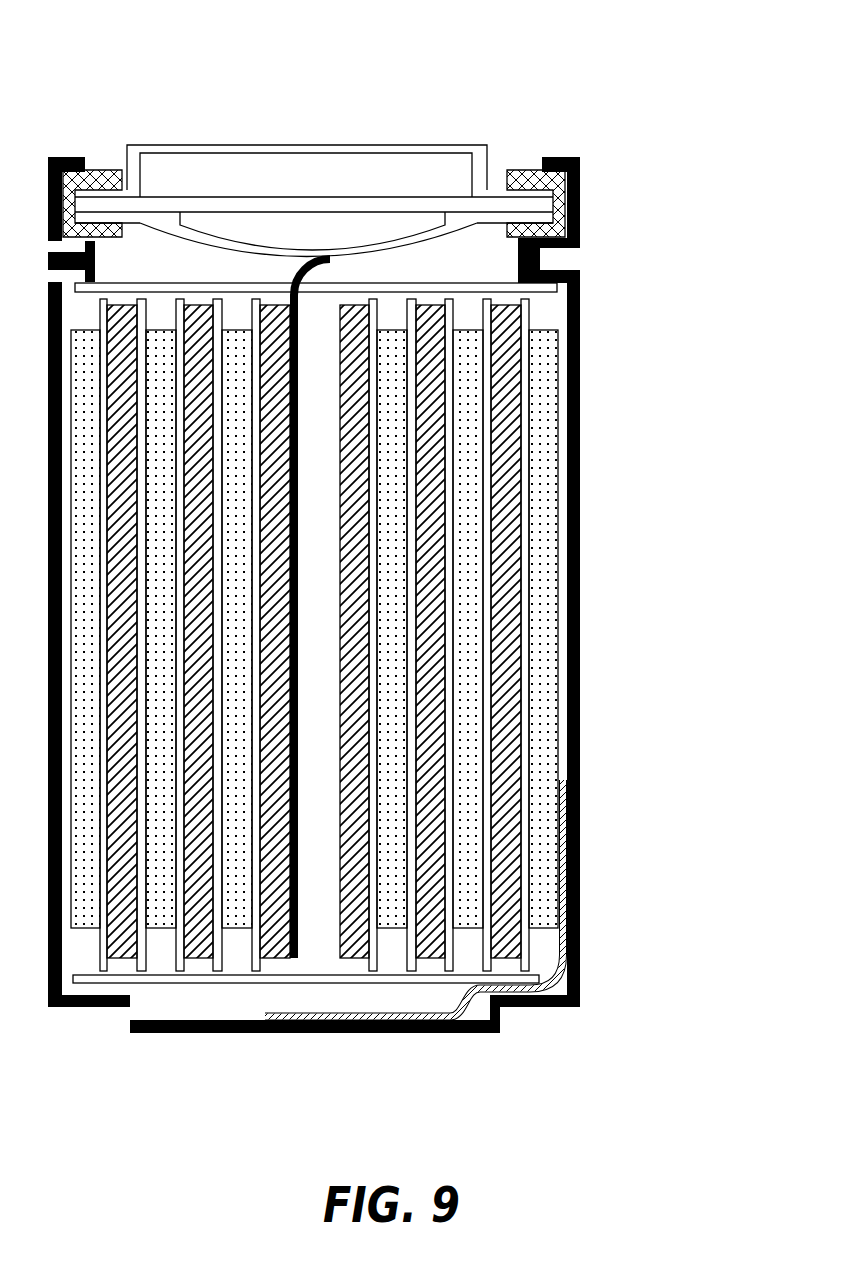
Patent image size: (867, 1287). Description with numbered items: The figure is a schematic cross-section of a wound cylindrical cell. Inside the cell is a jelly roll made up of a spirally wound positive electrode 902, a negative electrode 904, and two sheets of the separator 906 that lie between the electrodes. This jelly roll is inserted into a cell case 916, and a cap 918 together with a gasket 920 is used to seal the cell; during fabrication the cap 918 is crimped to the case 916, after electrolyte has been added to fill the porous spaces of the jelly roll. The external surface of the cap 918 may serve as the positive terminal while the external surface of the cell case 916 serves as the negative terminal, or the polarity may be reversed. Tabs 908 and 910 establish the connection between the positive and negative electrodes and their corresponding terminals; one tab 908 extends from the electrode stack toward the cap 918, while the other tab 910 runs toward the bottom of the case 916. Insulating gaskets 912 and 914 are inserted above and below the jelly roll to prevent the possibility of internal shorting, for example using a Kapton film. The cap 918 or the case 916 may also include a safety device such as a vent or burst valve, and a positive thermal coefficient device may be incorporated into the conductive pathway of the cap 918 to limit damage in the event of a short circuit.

The positive electrode 902 is at (543, 658).
The negative electrode 904 is at (510, 500).
The separator 906 is at (519, 325).
The tab 908 is at (293, 275).
The tab 910 is at (535, 990).
The insulating gasket 912 is at (470, 284).
The insulating gasket 914 is at (430, 983).
The cell case 916 is at (197, 1018).
The cap 918 is at (398, 148).
The gasket 920 is at (533, 170).